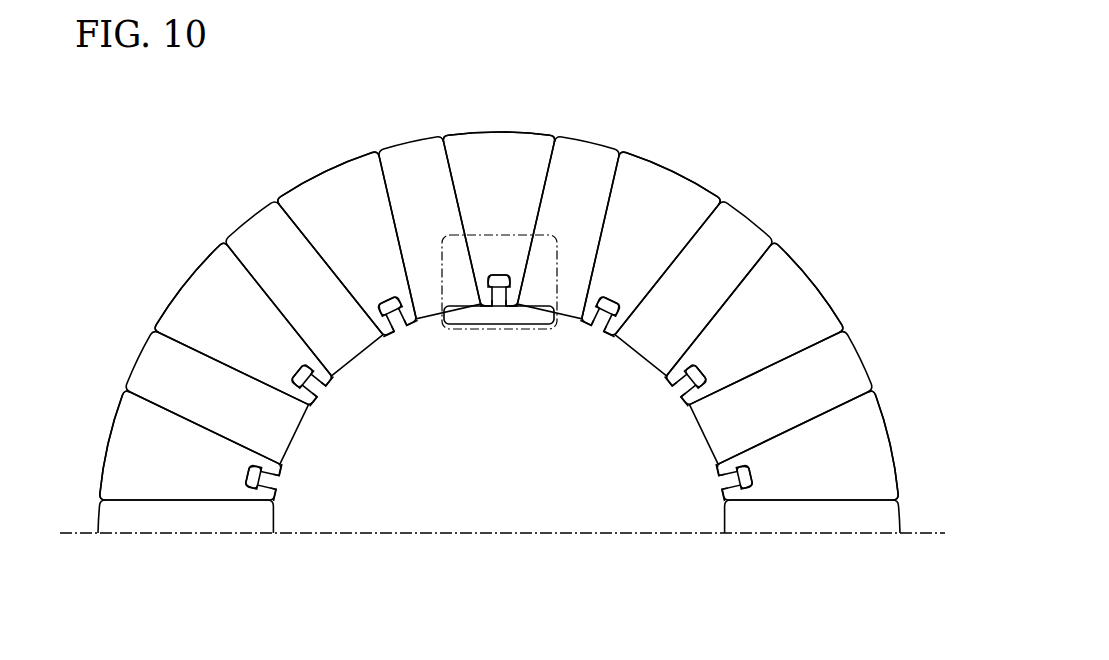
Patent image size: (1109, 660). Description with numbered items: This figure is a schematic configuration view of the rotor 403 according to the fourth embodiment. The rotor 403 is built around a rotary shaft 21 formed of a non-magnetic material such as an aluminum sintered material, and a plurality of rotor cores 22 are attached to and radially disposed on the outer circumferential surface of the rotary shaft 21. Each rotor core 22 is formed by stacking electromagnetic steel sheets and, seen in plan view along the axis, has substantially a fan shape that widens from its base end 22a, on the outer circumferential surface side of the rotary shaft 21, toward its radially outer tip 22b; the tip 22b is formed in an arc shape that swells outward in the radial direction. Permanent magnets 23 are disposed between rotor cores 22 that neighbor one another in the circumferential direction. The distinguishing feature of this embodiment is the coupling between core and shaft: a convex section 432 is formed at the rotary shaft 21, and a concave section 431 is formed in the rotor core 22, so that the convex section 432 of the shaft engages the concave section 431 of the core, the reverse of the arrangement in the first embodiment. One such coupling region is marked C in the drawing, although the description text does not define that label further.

The rotary shaft 21 is at (503, 535).
The rotor core 22 is at (120, 448).
The base end 22a is at (383, 335).
The tip 22b is at (113, 413).
The permanent magnet 23 is at (147, 363).
The rotor 403 is at (502, 301).
The concave section 431 is at (268, 482).
The convex section 432 is at (260, 473).
The detail region C is at (512, 332).